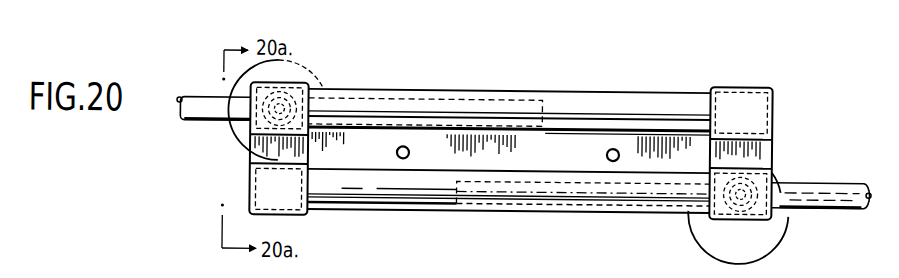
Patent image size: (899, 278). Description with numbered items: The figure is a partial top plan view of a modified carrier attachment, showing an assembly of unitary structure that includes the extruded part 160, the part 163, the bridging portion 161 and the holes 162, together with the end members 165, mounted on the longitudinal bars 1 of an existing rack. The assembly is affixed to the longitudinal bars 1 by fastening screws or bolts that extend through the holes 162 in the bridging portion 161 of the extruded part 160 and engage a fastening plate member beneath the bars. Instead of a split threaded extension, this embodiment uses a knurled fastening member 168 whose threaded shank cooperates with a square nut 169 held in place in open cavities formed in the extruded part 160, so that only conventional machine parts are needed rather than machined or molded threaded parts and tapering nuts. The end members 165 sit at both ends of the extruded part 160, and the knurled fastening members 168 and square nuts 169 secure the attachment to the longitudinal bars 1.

The longitudinal bar 1 is at (183, 100).
The extruded part 160 is at (497, 151).
The bridging portion 161 is at (541, 166).
The holes 162 is at (397, 154).
The unitary structure part 163 is at (566, 104).
The end member 165 is at (246, 175).
The knurled fastening member 168 is at (306, 66).
The square nut 169 is at (319, 72).